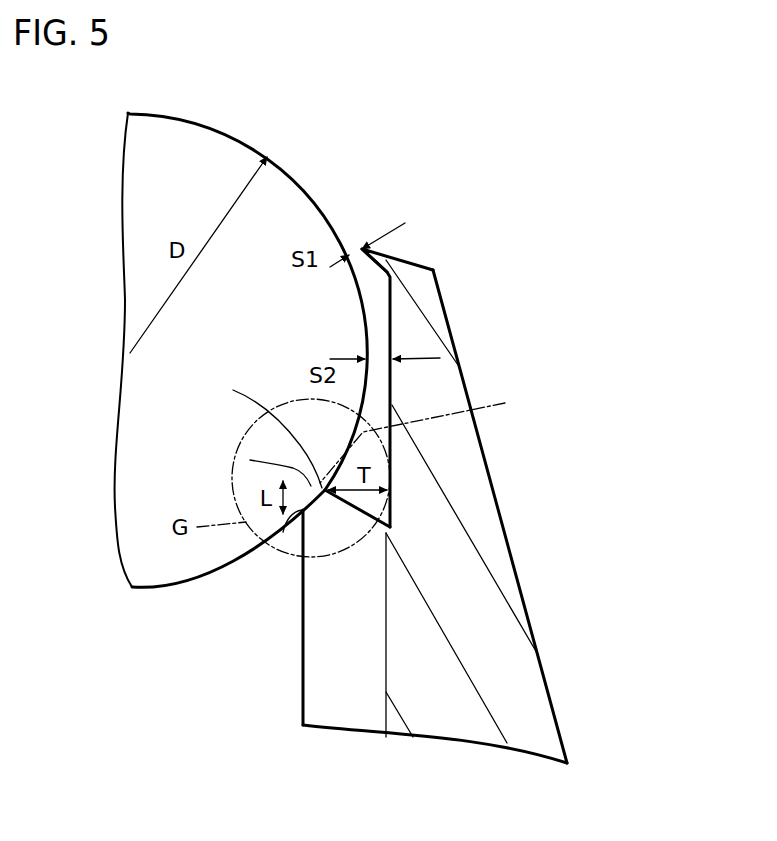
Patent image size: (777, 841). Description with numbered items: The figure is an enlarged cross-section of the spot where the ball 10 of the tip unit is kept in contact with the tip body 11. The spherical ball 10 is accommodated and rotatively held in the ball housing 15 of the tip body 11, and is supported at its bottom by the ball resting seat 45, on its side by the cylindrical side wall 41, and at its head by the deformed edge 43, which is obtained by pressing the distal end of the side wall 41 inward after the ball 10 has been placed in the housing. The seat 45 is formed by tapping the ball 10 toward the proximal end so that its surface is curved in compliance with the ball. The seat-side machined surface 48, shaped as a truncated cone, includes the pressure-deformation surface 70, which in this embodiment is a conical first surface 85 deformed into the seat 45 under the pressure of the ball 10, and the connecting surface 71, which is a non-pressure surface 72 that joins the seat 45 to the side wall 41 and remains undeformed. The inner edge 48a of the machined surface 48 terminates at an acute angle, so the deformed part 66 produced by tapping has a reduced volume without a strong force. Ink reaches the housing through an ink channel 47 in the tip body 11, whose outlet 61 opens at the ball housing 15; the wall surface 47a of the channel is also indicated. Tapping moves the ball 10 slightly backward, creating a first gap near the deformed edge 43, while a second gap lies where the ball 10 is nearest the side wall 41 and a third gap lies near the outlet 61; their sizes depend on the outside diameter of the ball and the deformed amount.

The ball 10 is at (185, 147).
The tip body 11 is at (518, 653).
The ball housing 15 is at (383, 373).
The side wall 41 is at (380, 330).
The deformed edge 43 is at (362, 249).
The ball resting seat 45 is at (283, 532).
The ink channel 47 is at (320, 677).
The wall surface 47a is at (387, 672).
The machined surface 48 is at (487, 456).
The inner edge 48a is at (250, 460).
The outlet 61 is at (348, 513).
The deformed part 66 is at (233, 390).
The pressure-deformation surface 70 is at (461, 434).
The first surface 85 is at (461, 434).
The connecting surface 71 is at (457, 491).
The non-pressure surface 72 is at (350, 508).